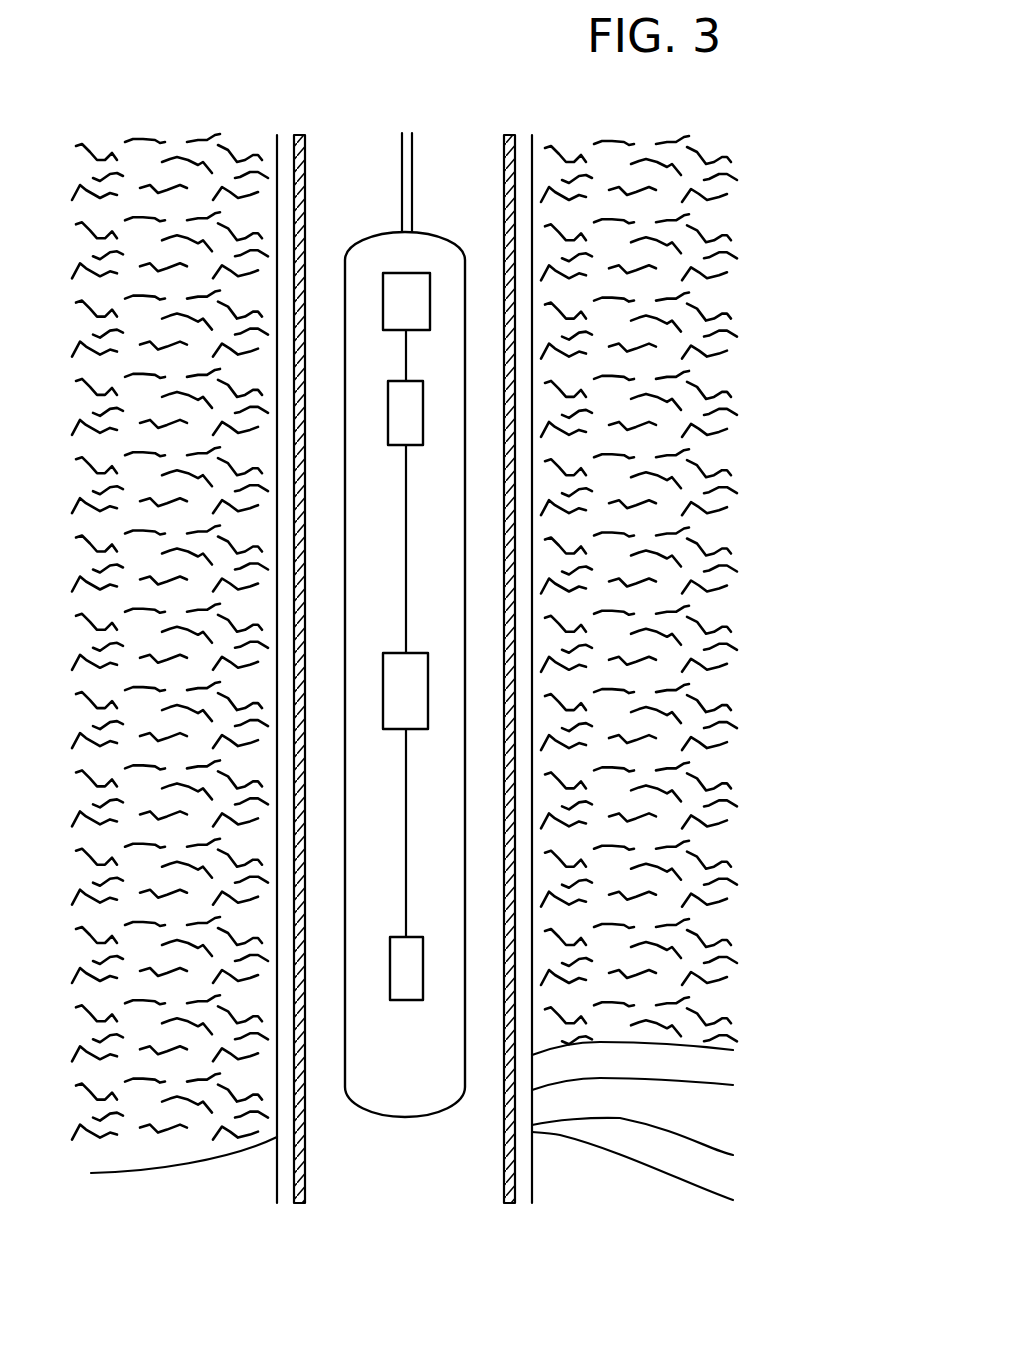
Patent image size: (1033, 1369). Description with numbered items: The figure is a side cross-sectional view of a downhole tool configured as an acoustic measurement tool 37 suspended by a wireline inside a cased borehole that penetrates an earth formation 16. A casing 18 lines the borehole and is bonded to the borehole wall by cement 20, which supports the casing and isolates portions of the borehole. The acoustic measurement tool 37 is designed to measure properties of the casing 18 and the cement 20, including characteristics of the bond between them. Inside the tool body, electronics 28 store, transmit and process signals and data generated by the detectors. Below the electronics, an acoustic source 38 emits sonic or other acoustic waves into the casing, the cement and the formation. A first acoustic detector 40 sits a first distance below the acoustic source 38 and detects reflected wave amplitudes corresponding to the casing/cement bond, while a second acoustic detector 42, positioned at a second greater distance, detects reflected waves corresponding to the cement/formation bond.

The earth formation 16 is at (212, 1149).
The casing 18 is at (510, 1203).
The cement 20 is at (522, 1203).
The acoustic measurement tool 37 is at (391, 600).
The electronics 28 is at (412, 290).
The acoustic source 38 is at (401, 428).
The first acoustic detector 40 is at (401, 716).
The second acoustic detector 42 is at (401, 980).